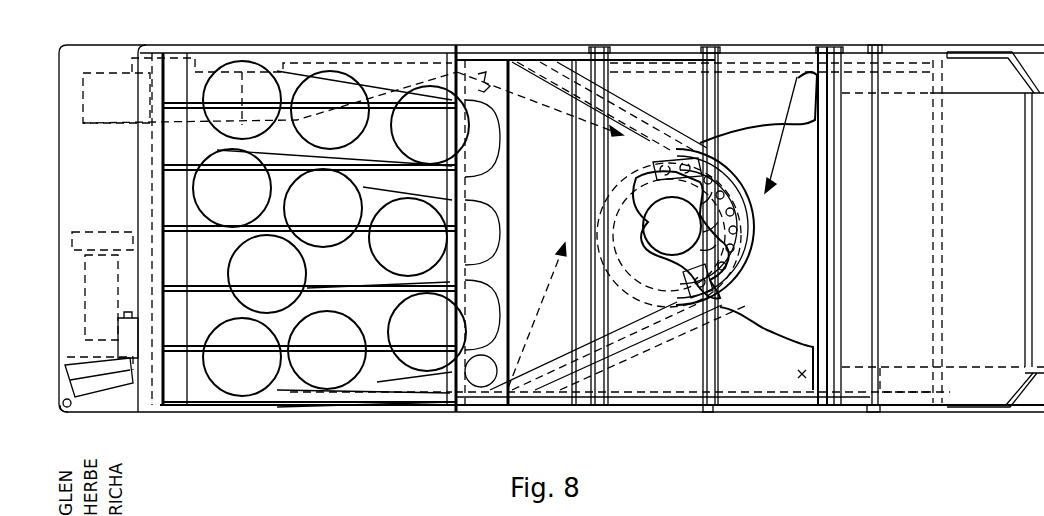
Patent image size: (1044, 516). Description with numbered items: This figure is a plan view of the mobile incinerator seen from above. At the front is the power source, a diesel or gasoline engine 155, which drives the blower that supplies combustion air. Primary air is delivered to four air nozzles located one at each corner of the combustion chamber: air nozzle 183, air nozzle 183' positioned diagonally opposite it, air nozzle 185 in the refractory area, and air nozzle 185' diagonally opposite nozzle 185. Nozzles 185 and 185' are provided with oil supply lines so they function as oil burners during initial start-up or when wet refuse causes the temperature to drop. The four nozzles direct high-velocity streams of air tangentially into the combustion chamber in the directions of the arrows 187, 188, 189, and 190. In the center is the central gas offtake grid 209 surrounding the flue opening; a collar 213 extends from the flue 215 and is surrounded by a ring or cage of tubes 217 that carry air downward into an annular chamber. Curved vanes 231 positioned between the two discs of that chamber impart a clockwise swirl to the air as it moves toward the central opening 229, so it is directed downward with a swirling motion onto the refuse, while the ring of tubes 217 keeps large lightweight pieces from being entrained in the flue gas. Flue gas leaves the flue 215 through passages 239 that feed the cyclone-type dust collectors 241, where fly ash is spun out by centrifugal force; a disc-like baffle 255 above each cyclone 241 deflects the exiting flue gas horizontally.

The engine 155 is at (83, 282).
The air nozzle 183 is at (506, 53).
The air nozzle 183' is at (818, 403).
The air nozzle 185 is at (782, 45).
The air nozzle 185' is at (515, 416).
The arrow 187 is at (567, 120).
The arrow 188 is at (781, 150).
The arrow 189 is at (728, 342).
The arrow 190 is at (530, 318).
The central gas offtake grid 209 is at (663, 303).
The collar 213 is at (737, 281).
The flue 215 is at (650, 137).
The tubes 217 is at (748, 240).
The central opening 229 is at (672, 226).
The curved vanes 231 is at (718, 195).
The passages 239 is at (490, 177).
The cyclone-type dust collector 241 is at (383, 262).
The baffle 255 is at (242, 260).